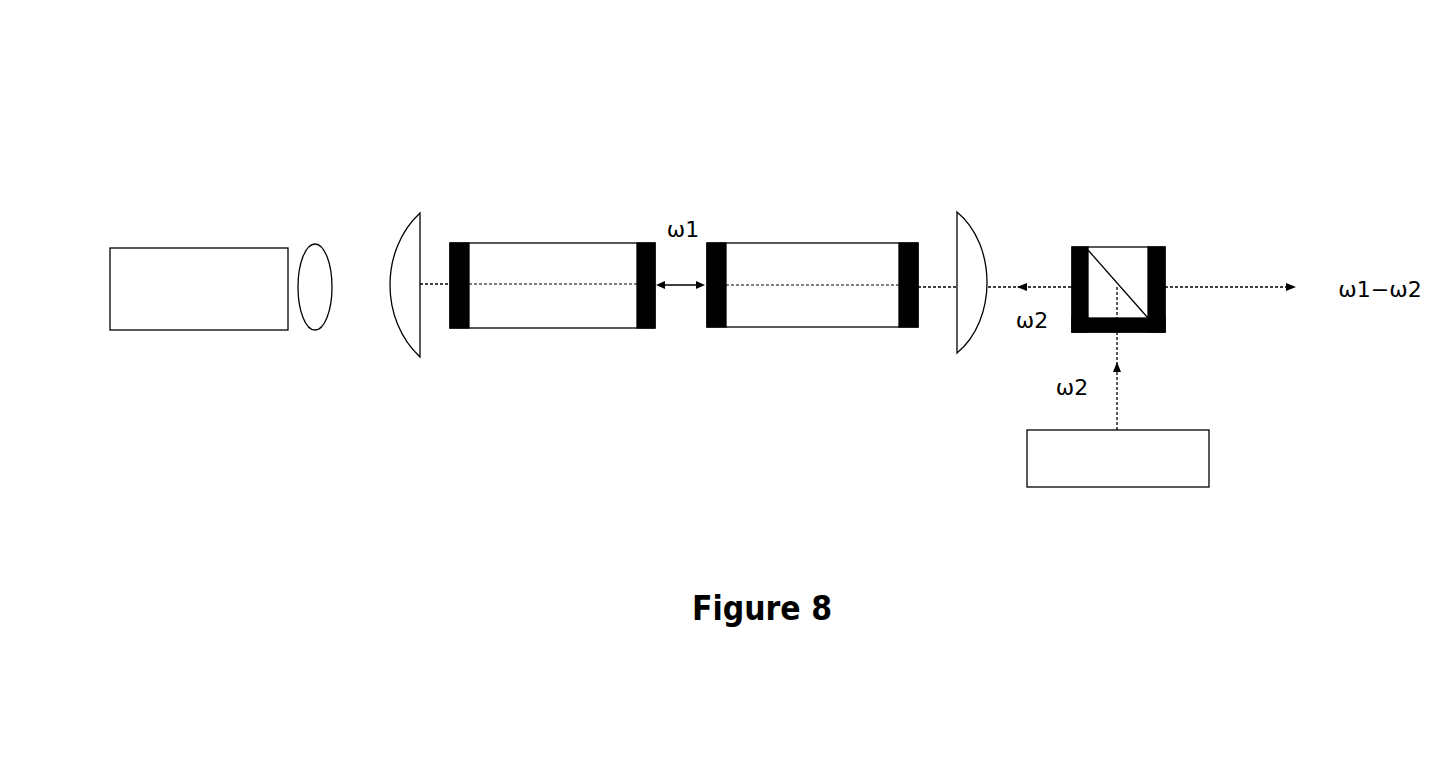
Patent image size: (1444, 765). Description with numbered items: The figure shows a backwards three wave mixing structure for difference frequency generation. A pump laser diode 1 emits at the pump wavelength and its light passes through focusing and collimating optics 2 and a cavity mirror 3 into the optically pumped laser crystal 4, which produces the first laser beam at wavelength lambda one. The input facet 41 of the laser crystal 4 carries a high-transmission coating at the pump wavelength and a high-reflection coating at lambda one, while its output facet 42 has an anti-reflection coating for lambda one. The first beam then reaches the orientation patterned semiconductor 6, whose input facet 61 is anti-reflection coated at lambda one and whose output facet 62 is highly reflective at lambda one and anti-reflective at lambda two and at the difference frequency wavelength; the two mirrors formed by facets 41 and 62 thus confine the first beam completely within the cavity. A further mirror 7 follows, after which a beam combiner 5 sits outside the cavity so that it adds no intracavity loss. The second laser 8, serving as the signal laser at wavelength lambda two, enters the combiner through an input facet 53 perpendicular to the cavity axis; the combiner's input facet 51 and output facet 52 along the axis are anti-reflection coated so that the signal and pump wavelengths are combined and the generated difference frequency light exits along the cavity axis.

The pump laser diode 1 is at (198, 240).
The focusing and collimating optics 2 is at (315, 232).
The cavity mirror 3 is at (420, 192).
The laser crystal 4 is at (552, 268).
The input facet 41 is at (458, 335).
The output facet 42 is at (645, 332).
The beam combiner 5 is at (1214, 231).
The input facet 51 is at (1082, 232).
The output facet 52 is at (1163, 242).
The input facet 53 is at (1167, 328).
The orientation patterned semiconductor 6 is at (812, 284).
The input facet 61 is at (713, 345).
The output facet 62 is at (906, 338).
The mirror 7 is at (968, 207).
The second laser 8 is at (1222, 450).